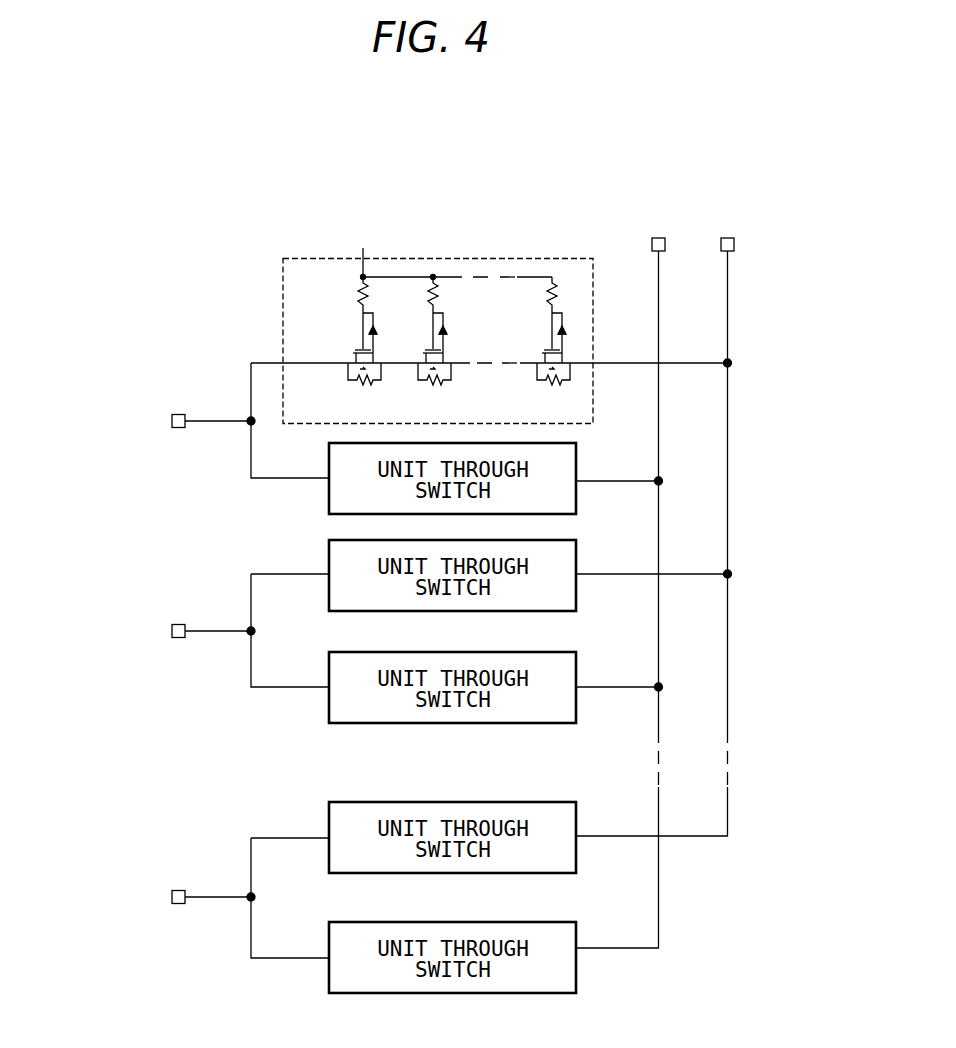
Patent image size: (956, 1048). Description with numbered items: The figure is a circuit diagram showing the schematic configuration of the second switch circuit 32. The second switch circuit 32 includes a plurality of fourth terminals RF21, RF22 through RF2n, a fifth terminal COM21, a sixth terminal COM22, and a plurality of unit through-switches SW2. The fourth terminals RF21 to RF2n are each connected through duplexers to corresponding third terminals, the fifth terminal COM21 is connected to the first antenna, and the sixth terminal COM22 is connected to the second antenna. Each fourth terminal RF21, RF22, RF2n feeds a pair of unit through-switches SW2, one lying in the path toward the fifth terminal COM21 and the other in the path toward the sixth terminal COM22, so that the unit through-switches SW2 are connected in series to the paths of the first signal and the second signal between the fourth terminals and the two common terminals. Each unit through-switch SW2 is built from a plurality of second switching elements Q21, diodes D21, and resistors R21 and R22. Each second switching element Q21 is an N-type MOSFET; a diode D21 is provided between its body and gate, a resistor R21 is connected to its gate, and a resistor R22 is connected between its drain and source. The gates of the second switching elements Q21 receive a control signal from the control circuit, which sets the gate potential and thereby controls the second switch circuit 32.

The second switch circuit 32 is at (460, 174).
The unit through-switch SW2 is at (329, 498).
The resistor R21 is at (342, 331).
The second switching element Q21 is at (325, 343).
The diode D21 is at (402, 333).
The resistor R22 is at (361, 406).
The fifth terminal COM21 is at (682, 520).
The sixth terminal COM22 is at (629, 576).
The fourth terminal RF21 is at (211, 420).
The fourth terminal RF22 is at (211, 630).
The fourth terminal RF2n is at (212, 898).